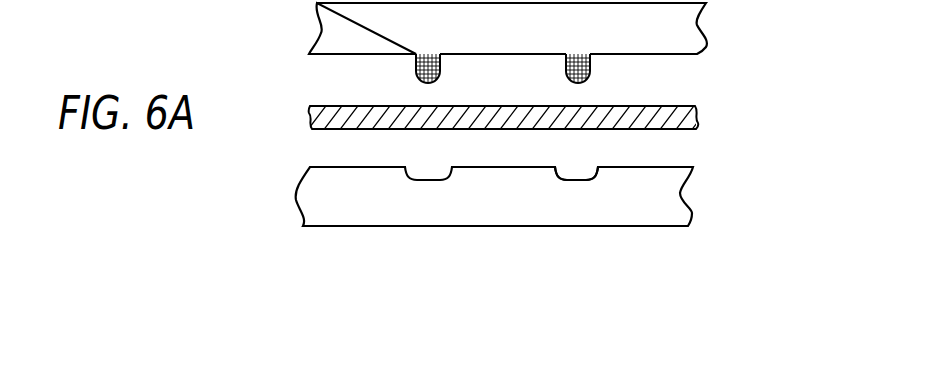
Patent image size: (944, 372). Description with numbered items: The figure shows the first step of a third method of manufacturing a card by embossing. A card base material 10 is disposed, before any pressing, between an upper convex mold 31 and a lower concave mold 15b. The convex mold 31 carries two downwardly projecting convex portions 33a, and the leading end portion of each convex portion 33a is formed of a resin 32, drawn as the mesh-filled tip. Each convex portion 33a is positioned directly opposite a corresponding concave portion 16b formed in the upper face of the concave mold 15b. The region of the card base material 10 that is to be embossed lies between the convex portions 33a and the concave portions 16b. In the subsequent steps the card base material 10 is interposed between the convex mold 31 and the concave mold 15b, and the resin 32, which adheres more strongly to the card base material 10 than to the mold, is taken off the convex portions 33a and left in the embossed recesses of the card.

The convex mold 31 is at (697, 25).
The convex portion 33a is at (566, 57).
The resin 32 is at (590, 70).
The card base material 10 is at (683, 115).
The concave mold 15b is at (668, 208).
The concave portion 16b is at (585, 168).